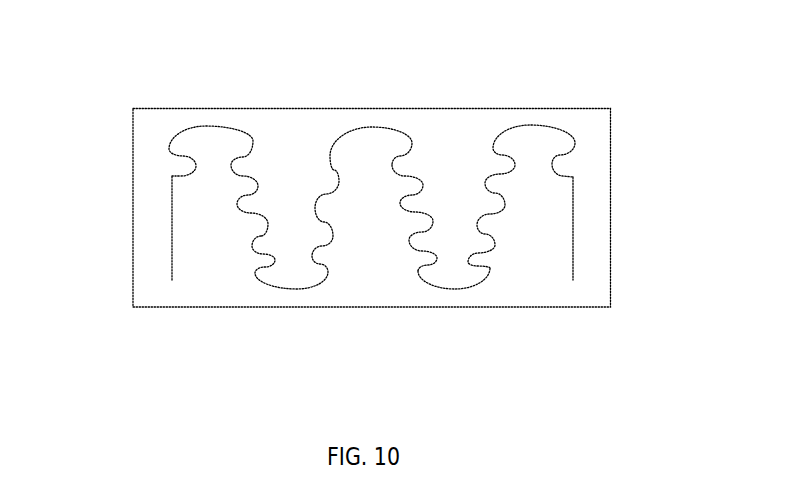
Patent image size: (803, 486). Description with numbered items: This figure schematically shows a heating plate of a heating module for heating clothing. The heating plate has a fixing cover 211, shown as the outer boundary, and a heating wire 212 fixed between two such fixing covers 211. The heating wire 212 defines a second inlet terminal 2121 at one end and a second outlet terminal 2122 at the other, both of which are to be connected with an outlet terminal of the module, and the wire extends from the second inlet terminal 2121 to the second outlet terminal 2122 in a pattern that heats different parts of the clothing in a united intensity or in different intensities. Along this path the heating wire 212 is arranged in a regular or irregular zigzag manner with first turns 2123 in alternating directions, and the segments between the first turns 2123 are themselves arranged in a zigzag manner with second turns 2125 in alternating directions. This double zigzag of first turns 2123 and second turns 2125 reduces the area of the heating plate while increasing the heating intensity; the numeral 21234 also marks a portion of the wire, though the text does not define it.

The fixing cover 211 is at (298, 130).
The heating wire 212 is at (578, 220).
The second inlet terminal 2121 is at (171, 270).
The second outlet terminal 2122 is at (572, 275).
The first turn 2123 is at (445, 288).
The second turn 2125 is at (419, 178).
The engaging tooth 21234 is at (251, 210).